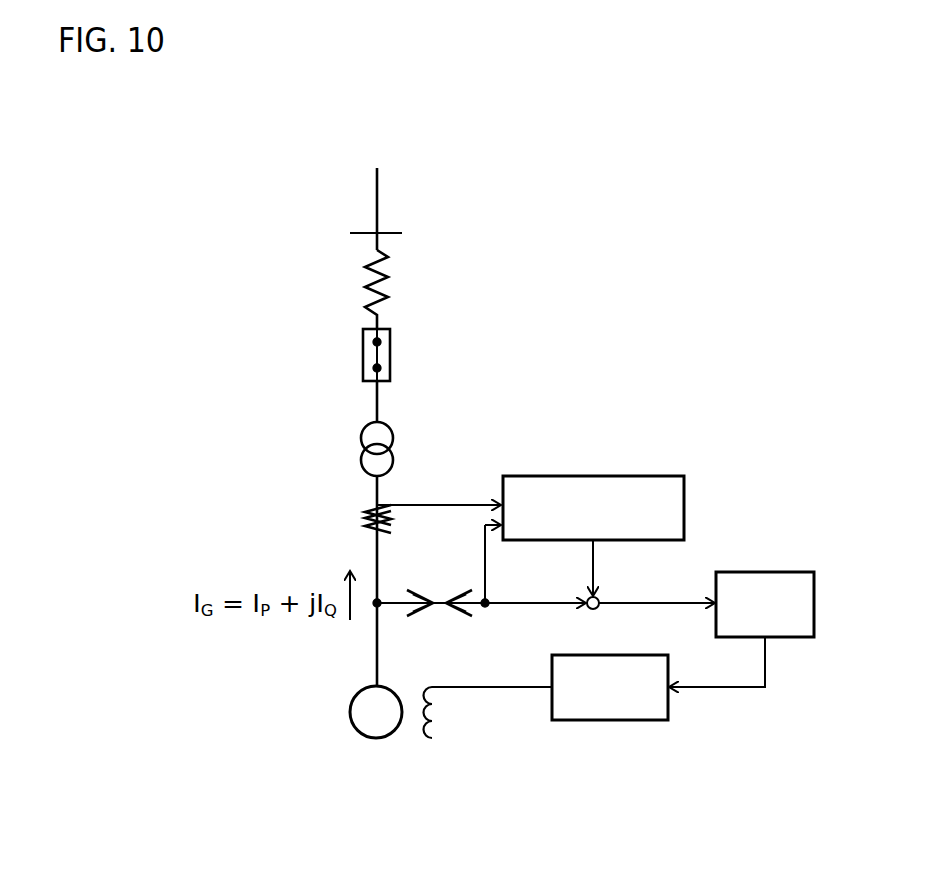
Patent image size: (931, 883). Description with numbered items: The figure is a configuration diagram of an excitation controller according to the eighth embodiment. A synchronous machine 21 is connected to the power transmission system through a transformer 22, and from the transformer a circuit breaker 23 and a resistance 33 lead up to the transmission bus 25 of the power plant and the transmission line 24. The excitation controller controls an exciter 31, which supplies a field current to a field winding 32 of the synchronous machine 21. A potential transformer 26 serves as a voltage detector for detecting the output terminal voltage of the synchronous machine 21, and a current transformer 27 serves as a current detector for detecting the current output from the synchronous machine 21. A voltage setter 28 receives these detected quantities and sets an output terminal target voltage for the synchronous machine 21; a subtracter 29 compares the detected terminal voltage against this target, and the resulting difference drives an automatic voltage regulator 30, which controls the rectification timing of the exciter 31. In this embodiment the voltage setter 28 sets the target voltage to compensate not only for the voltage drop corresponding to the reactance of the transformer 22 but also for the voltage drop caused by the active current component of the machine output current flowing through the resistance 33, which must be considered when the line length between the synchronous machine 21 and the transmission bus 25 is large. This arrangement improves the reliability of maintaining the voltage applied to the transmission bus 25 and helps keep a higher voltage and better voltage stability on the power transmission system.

The synchronous machine 21 is at (352, 727).
The transformer 22 is at (361, 441).
The circuit breaker 23 is at (363, 355).
The transmission line 24 is at (377, 193).
The transmission bus 25 is at (362, 236).
The potential transformer 26 is at (443, 590).
The current transformer 27 is at (394, 498).
The voltage setter 28 is at (614, 476).
The subtracter 29 is at (596, 612).
The automatic voltage regulator 30 is at (778, 572).
The exciter 31 is at (607, 720).
The field winding 32 is at (442, 718).
The resistance 33 is at (392, 281).